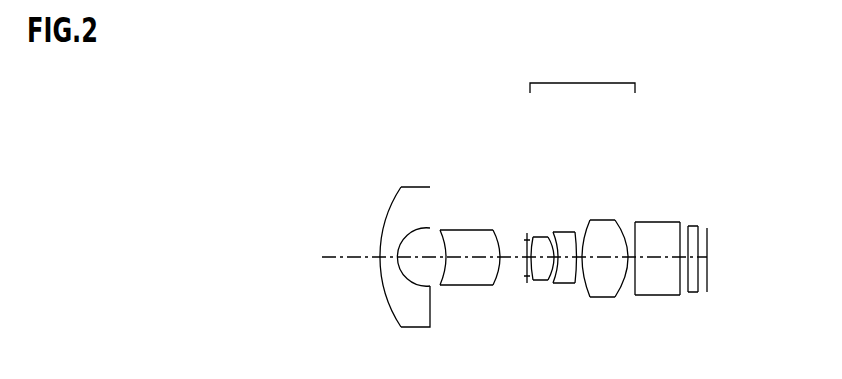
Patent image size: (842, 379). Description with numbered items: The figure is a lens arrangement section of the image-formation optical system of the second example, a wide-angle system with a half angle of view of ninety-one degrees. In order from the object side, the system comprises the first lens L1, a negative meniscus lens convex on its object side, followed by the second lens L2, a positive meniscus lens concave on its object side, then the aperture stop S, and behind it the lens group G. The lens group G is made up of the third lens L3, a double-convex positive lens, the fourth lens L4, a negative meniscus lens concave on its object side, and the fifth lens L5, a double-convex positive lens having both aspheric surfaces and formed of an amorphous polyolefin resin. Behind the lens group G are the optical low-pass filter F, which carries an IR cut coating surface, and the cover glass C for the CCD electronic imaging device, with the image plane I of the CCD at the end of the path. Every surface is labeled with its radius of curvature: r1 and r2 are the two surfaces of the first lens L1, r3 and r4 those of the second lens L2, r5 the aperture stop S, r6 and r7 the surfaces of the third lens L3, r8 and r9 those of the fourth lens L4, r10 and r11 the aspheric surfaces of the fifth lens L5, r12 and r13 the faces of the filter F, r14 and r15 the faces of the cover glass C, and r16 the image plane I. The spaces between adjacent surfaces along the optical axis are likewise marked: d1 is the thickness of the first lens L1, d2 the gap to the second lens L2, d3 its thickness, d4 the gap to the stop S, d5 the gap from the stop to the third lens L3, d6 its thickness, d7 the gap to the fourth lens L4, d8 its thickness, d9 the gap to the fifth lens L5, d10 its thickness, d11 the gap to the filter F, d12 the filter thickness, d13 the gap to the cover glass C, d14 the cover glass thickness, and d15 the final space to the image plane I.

The lens group G is at (582, 77).
The first lens L1 is at (397, 226).
The second lens L2 is at (467, 221).
The third lens L3 is at (540, 214).
The fourth lens L4 is at (571, 211).
The fifth lens L5 is at (610, 209).
The aperture stop S is at (516, 259).
The optical low-pass filter F is at (656, 271).
The cover glass C is at (703, 268).
The image plane I is at (731, 243).
The radius of curvature of lens surface r1 is at (392, 203).
The radius of curvature of lens surface r2 is at (412, 200).
The radius of curvature of lens surface r3 is at (442, 231).
The radius of curvature of lens surface r4 is at (495, 231).
The radius of curvature of lens surface r5 is at (527, 236).
The radius of curvature of lens surface r6 is at (534, 237).
The radius of curvature of lens surface r7 is at (548, 237).
The radius of curvature of lens surface r8 is at (555, 232).
The radius of curvature of lens surface r9 is at (576, 232).
The radius of curvature of lens surface r10 is at (592, 220).
The radius of curvature of lens surface r11 is at (616, 220).
The radius of curvature of lens surface r12 is at (636, 222).
The radius of curvature of lens surface r13 is at (681, 222).
The radius of curvature of lens surface r14 is at (688, 226).
The radius of curvature of lens surface r15 is at (699, 226).
The radius of curvature of lens surface r16 is at (708, 233).
The space between adjacent lens surfaces d1 is at (392, 262).
The space between adjacent lens surfaces d2 is at (418, 270).
The space between adjacent lens surfaces d3 is at (473, 270).
The space between adjacent lens surfaces d4 is at (513, 270).
The space between adjacent lens surfaces d5 is at (530, 282).
The space between adjacent lens surfaces d6 is at (541, 281).
The space between adjacent lens surfaces d7 is at (552, 283).
The space between adjacent lens surfaces d8 is at (566, 284).
The space between adjacent lens surfaces d9 is at (578, 284).
The space between adjacent lens surfaces d10 is at (605, 272).
The space between adjacent lens surfaces d11 is at (631, 292).
The space between adjacent lens surfaces d12 is at (657, 273).
The space between adjacent lens surfaces d13 is at (684, 294).
The space between adjacent lens surfaces d14 is at (693, 294).
The space between adjacent lens surfaces d15 is at (702, 291).